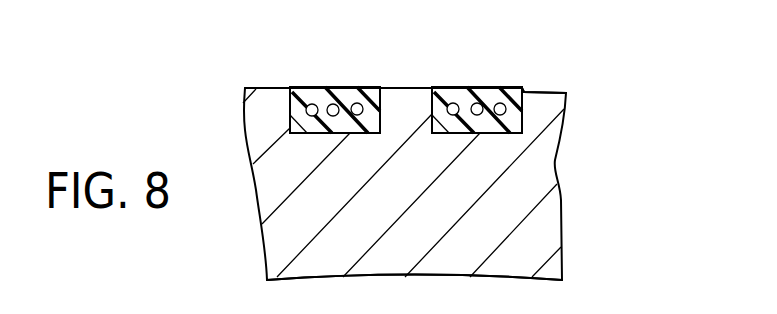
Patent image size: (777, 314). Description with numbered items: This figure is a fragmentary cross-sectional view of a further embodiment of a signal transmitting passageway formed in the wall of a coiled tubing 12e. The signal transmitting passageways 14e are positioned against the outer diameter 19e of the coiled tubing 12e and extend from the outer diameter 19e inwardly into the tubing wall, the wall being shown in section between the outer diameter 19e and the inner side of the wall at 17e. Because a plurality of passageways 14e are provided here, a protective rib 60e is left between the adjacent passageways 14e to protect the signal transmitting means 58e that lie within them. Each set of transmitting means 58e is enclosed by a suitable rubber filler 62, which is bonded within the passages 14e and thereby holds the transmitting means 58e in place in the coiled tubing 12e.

The coiled tubing 12e is at (574, 178).
The signal transmitting passageway 14e is at (490, 133).
The bottom surface 17e is at (525, 283).
The outer diameter 19e is at (566, 92).
The signal transmitting means 58e is at (335, 104).
The protective rib 60e is at (407, 92).
The rubber filler 62 is at (361, 87).